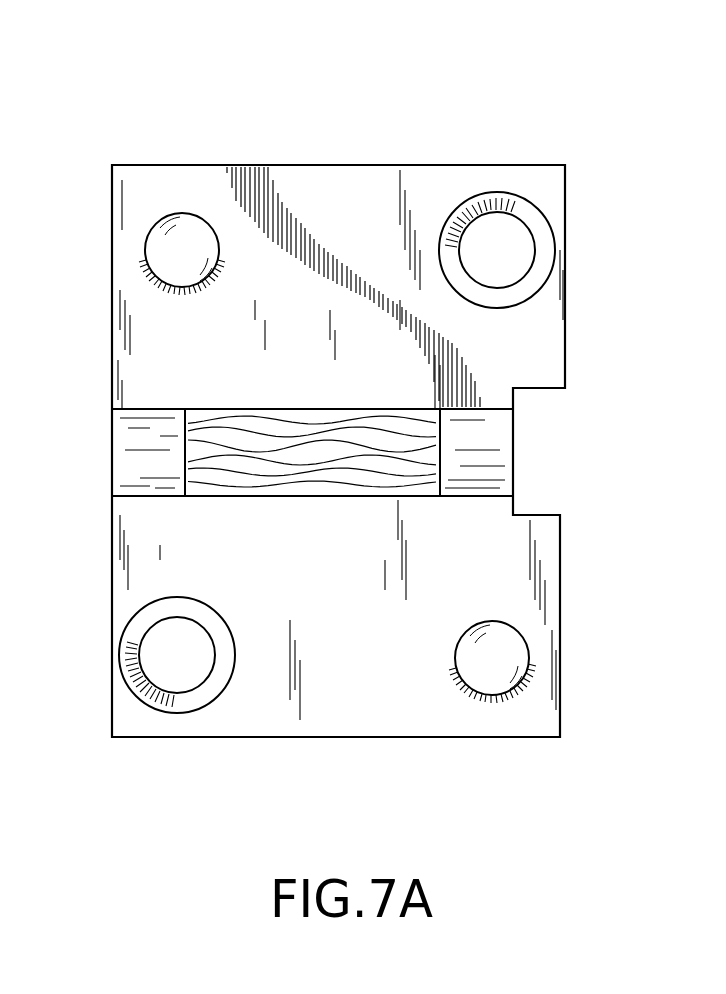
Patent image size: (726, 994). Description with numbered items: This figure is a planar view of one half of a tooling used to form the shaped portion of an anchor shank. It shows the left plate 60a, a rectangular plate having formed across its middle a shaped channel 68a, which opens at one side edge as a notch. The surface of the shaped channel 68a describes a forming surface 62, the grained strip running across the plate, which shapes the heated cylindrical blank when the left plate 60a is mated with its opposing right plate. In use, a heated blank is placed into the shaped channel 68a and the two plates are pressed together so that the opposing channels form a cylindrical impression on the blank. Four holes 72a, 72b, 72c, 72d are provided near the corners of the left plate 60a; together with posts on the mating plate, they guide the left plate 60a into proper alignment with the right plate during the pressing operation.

The left plate 60a is at (405, 140).
The forming surface 62 is at (237, 420).
The shaped channel 68a is at (532, 457).
The hole 72a is at (152, 216).
The hole 72b is at (532, 212).
The hole 72c is at (504, 692).
The hole 72d is at (160, 700).